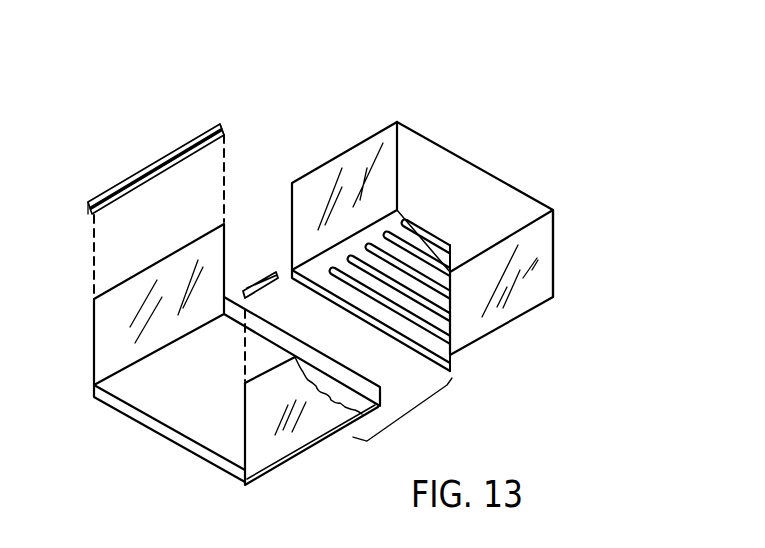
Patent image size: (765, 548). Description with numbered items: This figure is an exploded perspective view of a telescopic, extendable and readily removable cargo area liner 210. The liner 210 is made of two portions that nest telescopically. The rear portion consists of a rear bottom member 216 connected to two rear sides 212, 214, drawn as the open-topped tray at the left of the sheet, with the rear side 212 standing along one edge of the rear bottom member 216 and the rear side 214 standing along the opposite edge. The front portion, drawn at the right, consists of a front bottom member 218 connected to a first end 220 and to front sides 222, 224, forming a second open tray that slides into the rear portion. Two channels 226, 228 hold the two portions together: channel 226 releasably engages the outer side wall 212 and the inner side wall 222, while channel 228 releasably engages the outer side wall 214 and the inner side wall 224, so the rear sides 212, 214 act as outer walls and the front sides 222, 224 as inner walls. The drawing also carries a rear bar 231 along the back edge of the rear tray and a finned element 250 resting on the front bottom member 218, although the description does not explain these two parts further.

The telescopic readily removable cargo area liner 210 is at (482, 88).
The rear side 212 is at (95, 335).
The rear side 214 is at (247, 442).
The rear bottom member 216 is at (238, 354).
The front bottom member 218 is at (322, 273).
The front side 220 is at (470, 168).
The front side 222 is at (358, 152).
The front side 224 is at (540, 233).
The channel 226 is at (155, 162).
The channel 228 is at (258, 280).
The rear bar 231 is at (326, 341).
The fin coil assembly 250 is at (428, 335).